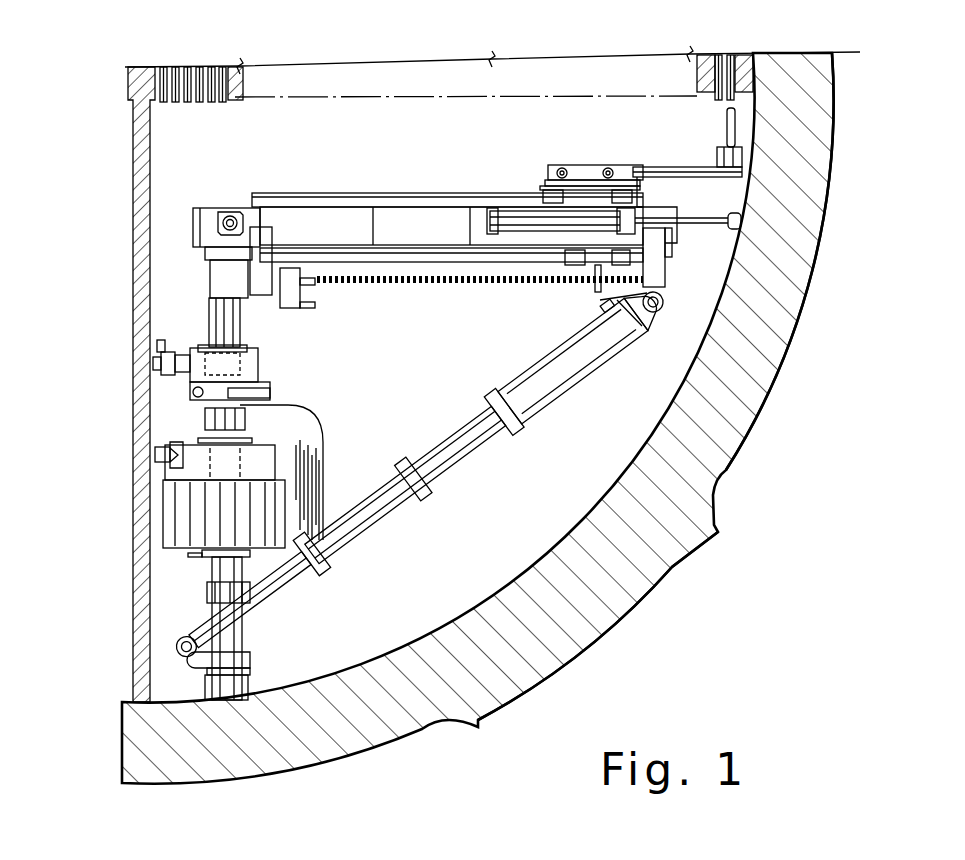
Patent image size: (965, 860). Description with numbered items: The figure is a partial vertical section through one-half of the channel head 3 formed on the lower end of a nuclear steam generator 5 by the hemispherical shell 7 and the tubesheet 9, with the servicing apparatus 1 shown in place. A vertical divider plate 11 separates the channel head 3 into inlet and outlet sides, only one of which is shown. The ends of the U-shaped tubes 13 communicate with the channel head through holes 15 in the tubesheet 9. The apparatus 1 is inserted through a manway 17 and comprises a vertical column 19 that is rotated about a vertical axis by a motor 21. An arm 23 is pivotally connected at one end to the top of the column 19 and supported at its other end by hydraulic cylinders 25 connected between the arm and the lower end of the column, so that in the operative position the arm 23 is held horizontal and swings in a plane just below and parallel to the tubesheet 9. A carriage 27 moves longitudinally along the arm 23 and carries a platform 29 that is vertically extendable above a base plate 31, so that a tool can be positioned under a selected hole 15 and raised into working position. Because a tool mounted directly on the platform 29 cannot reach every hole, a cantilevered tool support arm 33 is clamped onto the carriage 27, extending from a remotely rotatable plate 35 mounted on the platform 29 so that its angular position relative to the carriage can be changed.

The servicing apparatus 1 is at (328, 407).
The channel head 3 is at (605, 432).
The nuclear steam generator 5 is at (924, 232).
The hemispherical shell 7 is at (808, 305).
The tubesheet 9 is at (376, 98).
The vertical divider plate 11 is at (133, 268).
The U-shaped tubes 13 is at (740, 68).
The holes 15 is at (233, 91).
The manway 17 is at (565, 612).
The column 19 is at (242, 330).
The motor 21 is at (187, 540).
The arm 23 is at (318, 193).
The hydraulic cylinders 25 is at (552, 403).
The carriage 27 is at (533, 290).
The platform 29 is at (538, 189).
The base plate 31 is at (646, 195).
The tool support arm 33 is at (713, 170).
The rotatable plate 35 is at (548, 181).